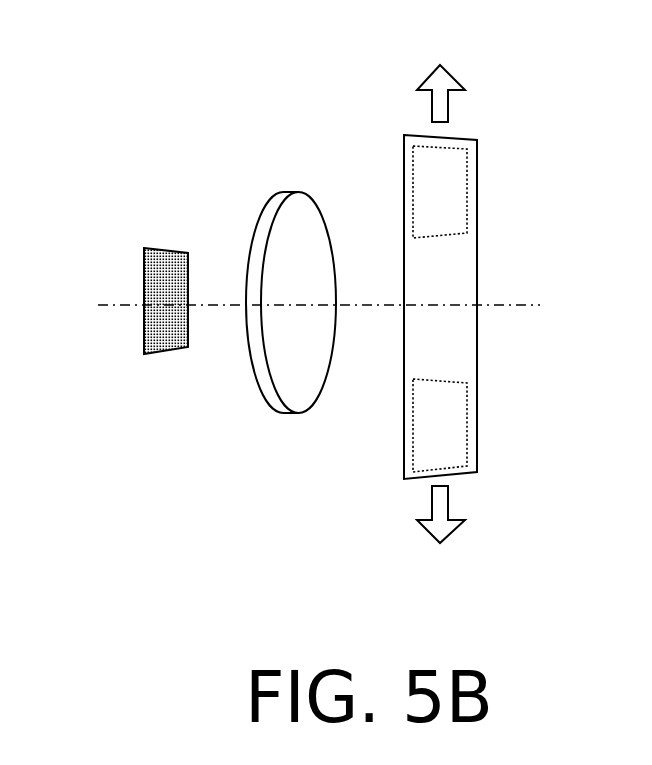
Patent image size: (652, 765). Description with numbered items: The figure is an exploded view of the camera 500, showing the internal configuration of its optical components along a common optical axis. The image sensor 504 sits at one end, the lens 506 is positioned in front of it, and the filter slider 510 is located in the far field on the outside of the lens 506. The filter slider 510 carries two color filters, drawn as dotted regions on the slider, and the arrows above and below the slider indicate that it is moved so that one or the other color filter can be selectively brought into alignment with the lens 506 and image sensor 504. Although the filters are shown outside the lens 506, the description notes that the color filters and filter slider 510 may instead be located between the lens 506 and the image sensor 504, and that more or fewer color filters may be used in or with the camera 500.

The camera 500 is at (130, 72).
The image sensor 504 is at (144, 278).
The lens 506 is at (263, 398).
The filter slider 510 is at (477, 150).